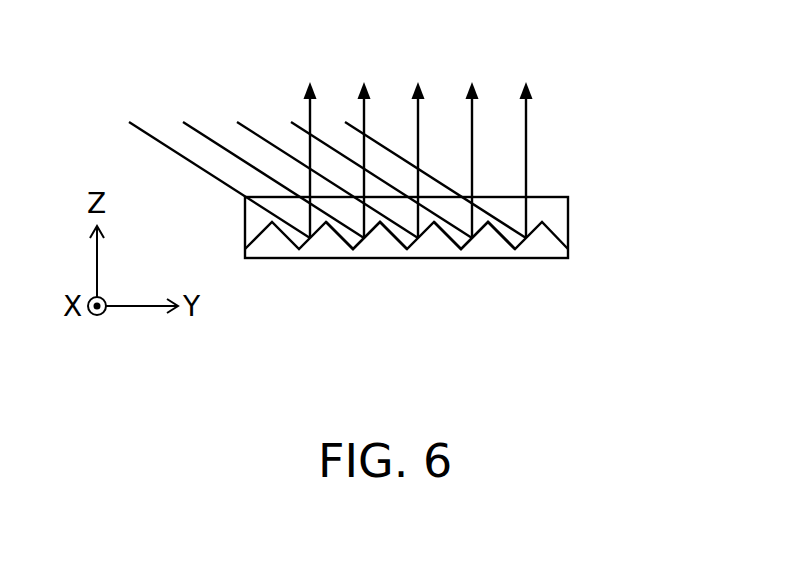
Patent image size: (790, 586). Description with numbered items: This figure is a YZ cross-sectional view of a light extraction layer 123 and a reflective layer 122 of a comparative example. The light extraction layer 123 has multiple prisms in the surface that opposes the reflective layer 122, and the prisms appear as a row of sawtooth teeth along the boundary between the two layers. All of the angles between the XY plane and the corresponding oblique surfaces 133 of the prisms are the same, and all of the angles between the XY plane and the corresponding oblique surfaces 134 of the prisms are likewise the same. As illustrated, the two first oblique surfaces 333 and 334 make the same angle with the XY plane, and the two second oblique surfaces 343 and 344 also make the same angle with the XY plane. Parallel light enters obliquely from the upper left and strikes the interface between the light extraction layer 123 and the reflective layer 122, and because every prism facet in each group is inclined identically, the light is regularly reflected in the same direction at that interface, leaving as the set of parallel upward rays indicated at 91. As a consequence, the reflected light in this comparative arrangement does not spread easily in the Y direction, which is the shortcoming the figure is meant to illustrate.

The emitted light 91 is at (525, 142).
The light extraction layer 123 is at (553, 207).
The reflective layer 122 is at (553, 250).
The first oblique surface 333 is at (333, 235).
The first oblique surface 334 is at (389, 238).
The second oblique surface 343 is at (466, 250).
The second oblique surface 344 is at (520, 250).
The oblique surfaces of the prisms 133 is at (382, 350).
The oblique surfaces of the prisms 134 is at (580, 350).